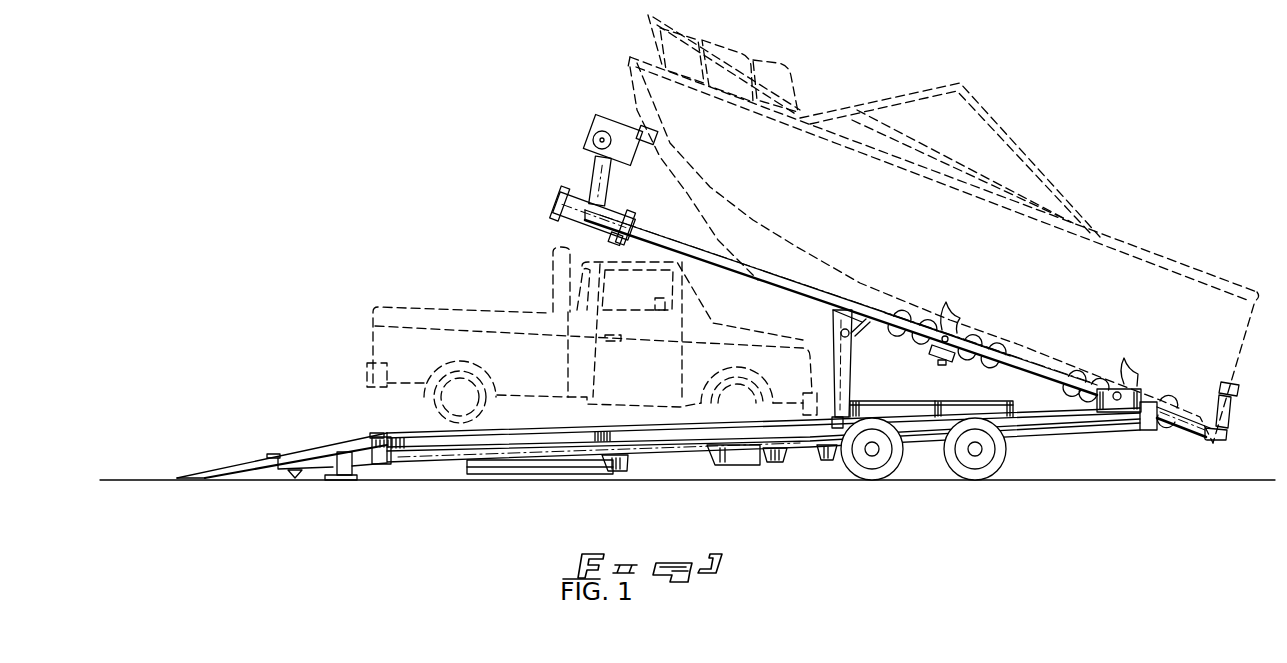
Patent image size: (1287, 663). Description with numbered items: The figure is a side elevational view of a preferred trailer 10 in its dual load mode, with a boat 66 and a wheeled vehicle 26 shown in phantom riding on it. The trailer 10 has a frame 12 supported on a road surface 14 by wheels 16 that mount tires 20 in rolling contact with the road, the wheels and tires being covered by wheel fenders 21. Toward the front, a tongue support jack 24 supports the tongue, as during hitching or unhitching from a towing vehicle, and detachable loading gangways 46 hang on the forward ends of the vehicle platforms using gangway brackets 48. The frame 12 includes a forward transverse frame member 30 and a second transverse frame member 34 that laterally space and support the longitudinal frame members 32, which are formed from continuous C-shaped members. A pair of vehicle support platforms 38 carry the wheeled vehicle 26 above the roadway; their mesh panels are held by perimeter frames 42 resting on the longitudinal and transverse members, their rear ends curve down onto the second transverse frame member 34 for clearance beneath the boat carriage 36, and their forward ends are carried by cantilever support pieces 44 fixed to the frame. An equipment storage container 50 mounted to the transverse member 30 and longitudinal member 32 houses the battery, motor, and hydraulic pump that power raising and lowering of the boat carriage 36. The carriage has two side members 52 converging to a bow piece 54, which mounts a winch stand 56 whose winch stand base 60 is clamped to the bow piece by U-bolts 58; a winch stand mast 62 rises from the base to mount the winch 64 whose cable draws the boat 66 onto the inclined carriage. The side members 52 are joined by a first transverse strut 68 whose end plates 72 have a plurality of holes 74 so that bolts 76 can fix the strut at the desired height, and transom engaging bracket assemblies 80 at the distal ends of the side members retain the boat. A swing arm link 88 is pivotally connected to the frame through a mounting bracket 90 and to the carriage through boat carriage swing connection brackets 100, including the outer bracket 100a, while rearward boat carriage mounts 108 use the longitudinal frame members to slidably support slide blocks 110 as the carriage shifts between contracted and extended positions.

The trailer 10 is at (457, 518).
The frame 12 is at (689, 467).
The road surface 14 is at (1073, 480).
The wheels 16 is at (873, 463).
The tires 20 is at (852, 470).
The wheel fenders 21 is at (905, 401).
The tongue support jack 24 is at (342, 445).
The wheeled vehicle 26 is at (428, 305).
The forward transverse frame member 30 is at (618, 470).
The longitudinal frame members 32 is at (657, 447).
The second transverse frame member 34 is at (770, 462).
The boat carriage 36 is at (546, 173).
The vehicle support platforms 38 is at (421, 420).
The perimeter frames 42 is at (393, 432).
The cantilever support pieces 44 is at (390, 465).
The gangways 46 is at (235, 465).
The gangway brackets 48 is at (380, 432).
The equipment storage container 50 is at (512, 474).
The side members 52 is at (773, 288).
The bow piece 54 is at (632, 222).
The winch stand 56 is at (579, 173).
The U-bolts 58 is at (628, 211).
The winch stand base 60 is at (580, 193).
The winch stand mast 62 is at (608, 180).
The winch 64 is at (595, 133).
The boat 66 is at (1135, 290).
The first transverse strut 68 is at (940, 362).
The end plates 72 is at (957, 318).
The holes 74 is at (948, 320).
The bolts 76 is at (970, 325).
The transom engaging bracket assemblies 80 is at (1212, 456).
The swing arm link 88 is at (849, 382).
The mounting bracket 90 is at (828, 459).
The boat carriage swing connection brackets 100 is at (818, 316).
The outer boat carriage swing connection bracket 100a is at (883, 341).
The rearward boat carriage mounts 108 is at (1159, 383).
The slide blocks 110 is at (1130, 413).